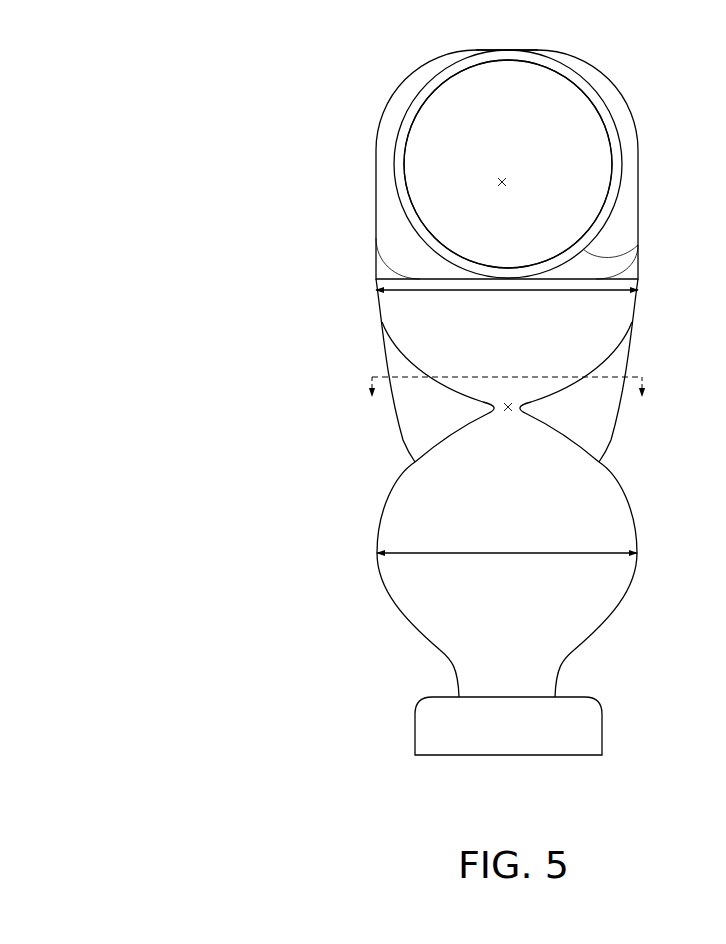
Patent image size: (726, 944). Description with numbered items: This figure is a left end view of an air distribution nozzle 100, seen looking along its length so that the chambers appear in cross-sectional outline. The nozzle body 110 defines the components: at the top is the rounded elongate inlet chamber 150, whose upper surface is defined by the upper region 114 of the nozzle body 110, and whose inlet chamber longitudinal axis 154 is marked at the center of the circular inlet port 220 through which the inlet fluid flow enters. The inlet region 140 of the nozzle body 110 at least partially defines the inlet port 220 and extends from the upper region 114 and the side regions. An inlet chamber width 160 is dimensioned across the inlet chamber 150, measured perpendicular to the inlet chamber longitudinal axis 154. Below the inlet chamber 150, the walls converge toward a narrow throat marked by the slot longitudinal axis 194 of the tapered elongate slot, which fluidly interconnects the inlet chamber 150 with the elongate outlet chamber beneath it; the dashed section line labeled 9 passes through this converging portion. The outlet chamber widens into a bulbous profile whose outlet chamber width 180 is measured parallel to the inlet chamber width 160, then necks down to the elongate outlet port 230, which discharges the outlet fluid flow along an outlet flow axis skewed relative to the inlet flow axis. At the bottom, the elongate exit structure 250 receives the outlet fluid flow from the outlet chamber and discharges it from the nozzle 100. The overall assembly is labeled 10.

The device 10 is at (252, 113).
The air distribution nozzle 100 is at (306, 146).
The nozzle body 110 is at (374, 235).
The upper region 114 is at (497, 50).
The inlet region 140 is at (638, 245).
The elongate inlet chamber 150 is at (520, 170).
The inlet chamber longitudinal axis 154 is at (504, 187).
The inlet chamber width 160 is at (506, 290).
The outlet chamber width 180 is at (476, 553).
The slot longitudinal axis 194 is at (508, 412).
The inlet port 220 is at (584, 160).
The elongate outlet port 230 is at (486, 687).
The elongate exit structure 250 is at (411, 733).
The section line 9- 9 is at (507, 401).